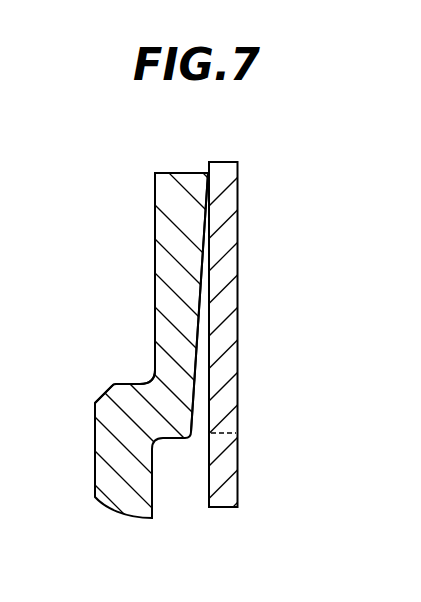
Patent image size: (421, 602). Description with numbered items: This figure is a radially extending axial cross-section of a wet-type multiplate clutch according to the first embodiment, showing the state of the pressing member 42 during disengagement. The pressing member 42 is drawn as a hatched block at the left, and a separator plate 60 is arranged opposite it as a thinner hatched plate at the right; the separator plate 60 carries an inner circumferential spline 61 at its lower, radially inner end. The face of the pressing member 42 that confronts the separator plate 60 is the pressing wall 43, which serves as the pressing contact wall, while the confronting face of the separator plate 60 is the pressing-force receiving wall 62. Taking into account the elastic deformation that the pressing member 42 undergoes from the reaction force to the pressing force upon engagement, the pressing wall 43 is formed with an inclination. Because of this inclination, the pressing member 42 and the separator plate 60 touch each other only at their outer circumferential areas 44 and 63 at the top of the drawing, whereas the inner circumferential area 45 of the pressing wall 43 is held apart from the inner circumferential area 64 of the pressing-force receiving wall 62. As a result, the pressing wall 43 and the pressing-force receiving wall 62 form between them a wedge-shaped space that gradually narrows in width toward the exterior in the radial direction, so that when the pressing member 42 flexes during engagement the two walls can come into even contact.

The pressing member 42 is at (177, 288).
The pressing wall 43 is at (195, 333).
The outer circumferential area 44 is at (177, 238).
The inner circumferential area 45 is at (190, 412).
The separator plate 60 is at (220, 176).
The inner circumferential spline 61 is at (226, 477).
The pressing-force receiving wall 62 is at (210, 322).
The outer circumferential area 63 is at (208, 228).
The inner circumferential area 64 is at (218, 412).